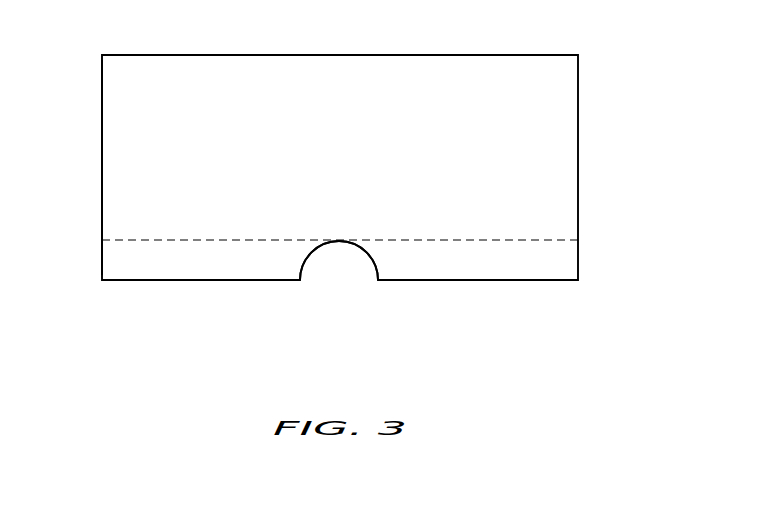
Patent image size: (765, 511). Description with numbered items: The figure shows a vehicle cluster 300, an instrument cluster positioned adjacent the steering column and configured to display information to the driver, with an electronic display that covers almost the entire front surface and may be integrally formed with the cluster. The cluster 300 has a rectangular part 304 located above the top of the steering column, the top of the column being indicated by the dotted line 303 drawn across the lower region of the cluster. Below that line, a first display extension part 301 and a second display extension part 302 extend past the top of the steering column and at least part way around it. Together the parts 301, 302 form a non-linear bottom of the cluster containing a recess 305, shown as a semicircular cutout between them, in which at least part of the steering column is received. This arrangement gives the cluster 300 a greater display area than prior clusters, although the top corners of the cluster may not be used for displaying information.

The vehicle cluster 300 is at (340, 55).
The first display extension part 301 is at (190, 258).
The second display extension part 302 is at (489, 258).
The dotted line 303 is at (528, 238).
The rectangular part 304 is at (115, 132).
The recess 305 is at (372, 258).